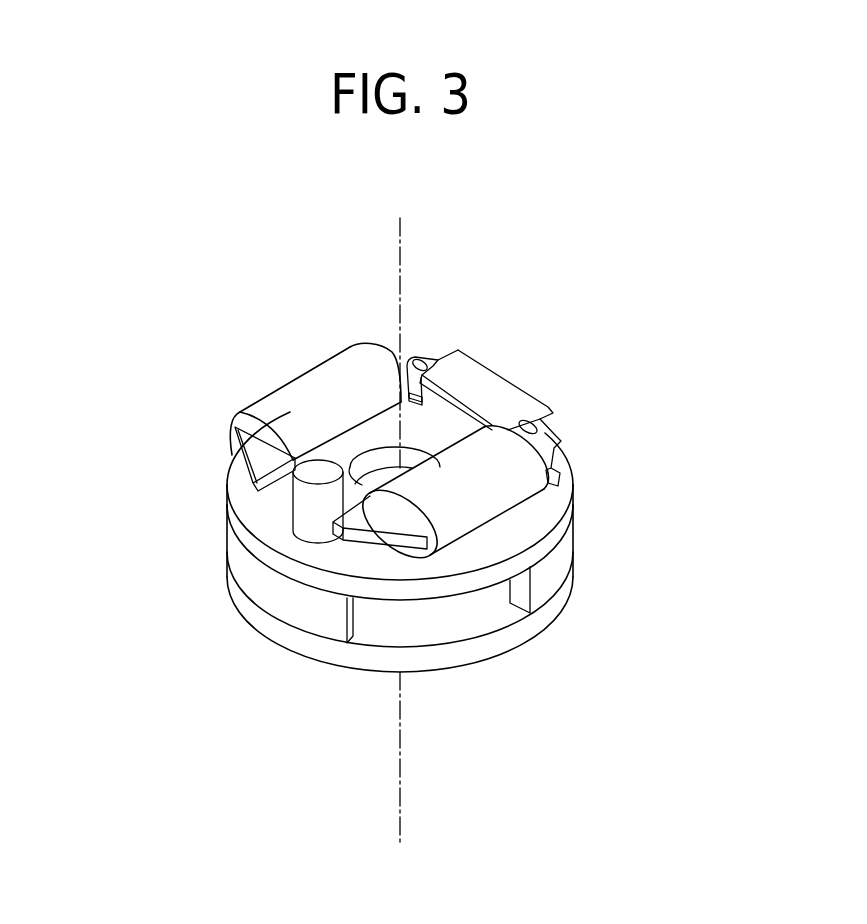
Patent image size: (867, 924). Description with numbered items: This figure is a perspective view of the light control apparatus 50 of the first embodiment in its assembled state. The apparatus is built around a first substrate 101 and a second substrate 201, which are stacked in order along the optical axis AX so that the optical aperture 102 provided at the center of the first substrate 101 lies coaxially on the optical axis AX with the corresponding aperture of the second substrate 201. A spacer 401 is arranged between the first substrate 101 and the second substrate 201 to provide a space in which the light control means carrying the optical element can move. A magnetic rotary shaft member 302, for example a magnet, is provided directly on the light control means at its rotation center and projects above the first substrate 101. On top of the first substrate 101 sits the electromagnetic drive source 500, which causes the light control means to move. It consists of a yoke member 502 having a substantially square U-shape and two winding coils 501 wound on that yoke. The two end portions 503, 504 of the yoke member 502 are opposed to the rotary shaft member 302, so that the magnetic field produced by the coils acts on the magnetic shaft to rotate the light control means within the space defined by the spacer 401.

The light control apparatus 50 is at (421, 898).
The first substrate 101 is at (467, 557).
The optical aperture 102 is at (378, 461).
The second substrate 201 is at (430, 632).
The rotary shaft member 302 is at (318, 478).
The spacer 401 is at (550, 571).
The electromagnetic drive source 500 is at (484, 359).
The winding coil 501 is at (317, 384).
The yoke member 502 is at (505, 380).
The end portion of yoke member 503 is at (258, 449).
The end portion of yoke member 504 is at (367, 523).
The optical axis AX is at (400, 256).